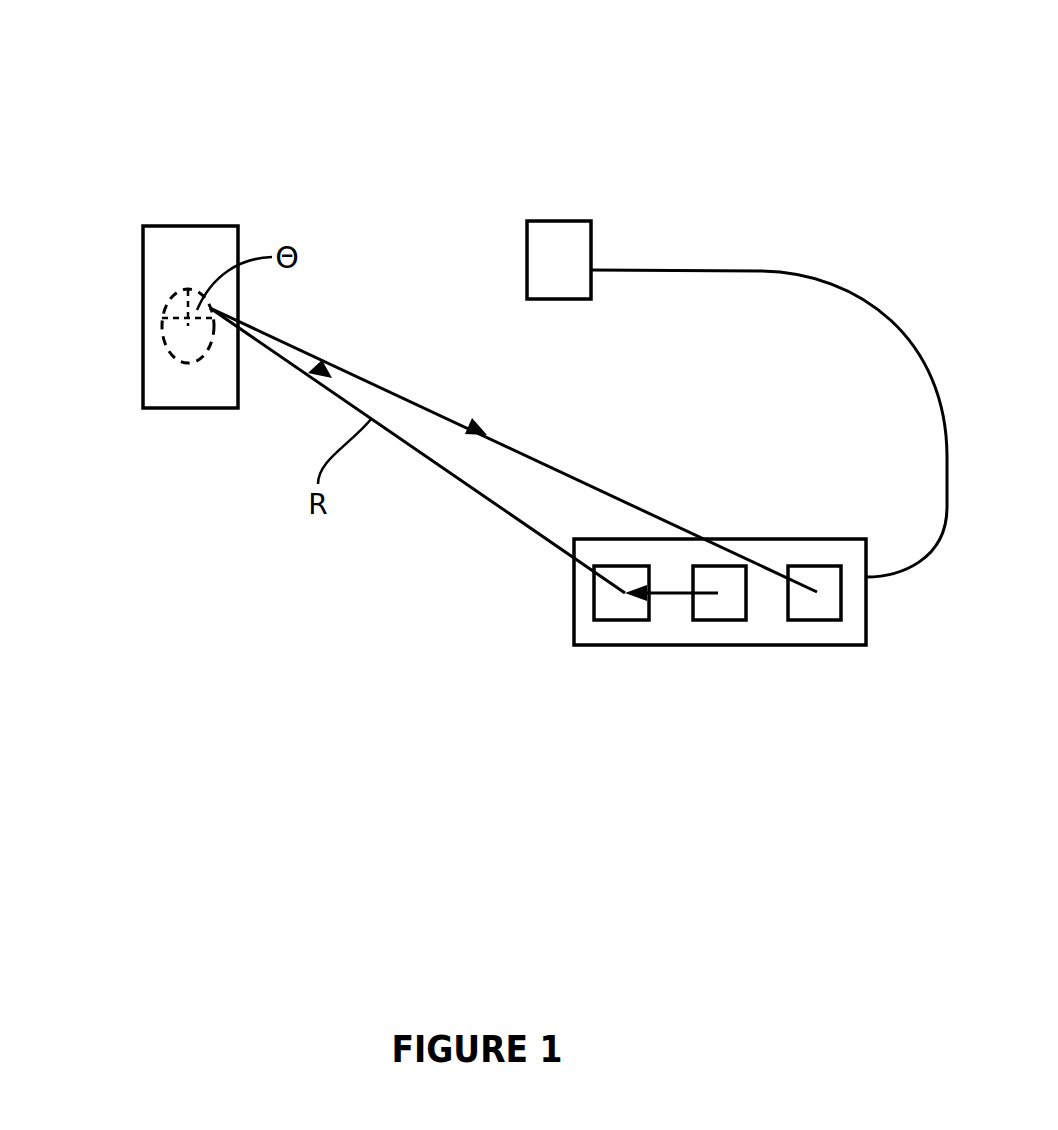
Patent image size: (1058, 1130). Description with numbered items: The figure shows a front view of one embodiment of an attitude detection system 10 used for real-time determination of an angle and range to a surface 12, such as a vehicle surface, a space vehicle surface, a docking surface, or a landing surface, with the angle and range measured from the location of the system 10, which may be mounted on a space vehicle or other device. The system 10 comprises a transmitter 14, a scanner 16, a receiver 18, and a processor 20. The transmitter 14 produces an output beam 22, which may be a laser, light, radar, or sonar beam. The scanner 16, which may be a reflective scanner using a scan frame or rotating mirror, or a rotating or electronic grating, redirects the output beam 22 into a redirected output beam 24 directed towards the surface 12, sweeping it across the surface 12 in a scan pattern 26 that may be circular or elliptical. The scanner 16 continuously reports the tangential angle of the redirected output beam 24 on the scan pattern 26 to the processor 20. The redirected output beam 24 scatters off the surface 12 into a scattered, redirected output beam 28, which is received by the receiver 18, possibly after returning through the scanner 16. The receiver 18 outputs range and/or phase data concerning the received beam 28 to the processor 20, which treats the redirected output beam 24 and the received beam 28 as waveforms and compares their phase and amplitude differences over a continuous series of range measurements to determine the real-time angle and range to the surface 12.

The system 10 is at (790, 130).
The surface 12 is at (222, 226).
The transmitter 14 is at (715, 566).
The scanner 16 is at (610, 566).
The receiver 18 is at (825, 566).
The processor 20 is at (591, 248).
The output beam 22 is at (667, 600).
The redirected output beam 24 is at (435, 462).
The scan pattern 26 is at (162, 323).
The scattered, redirected output beam 28 is at (408, 398).